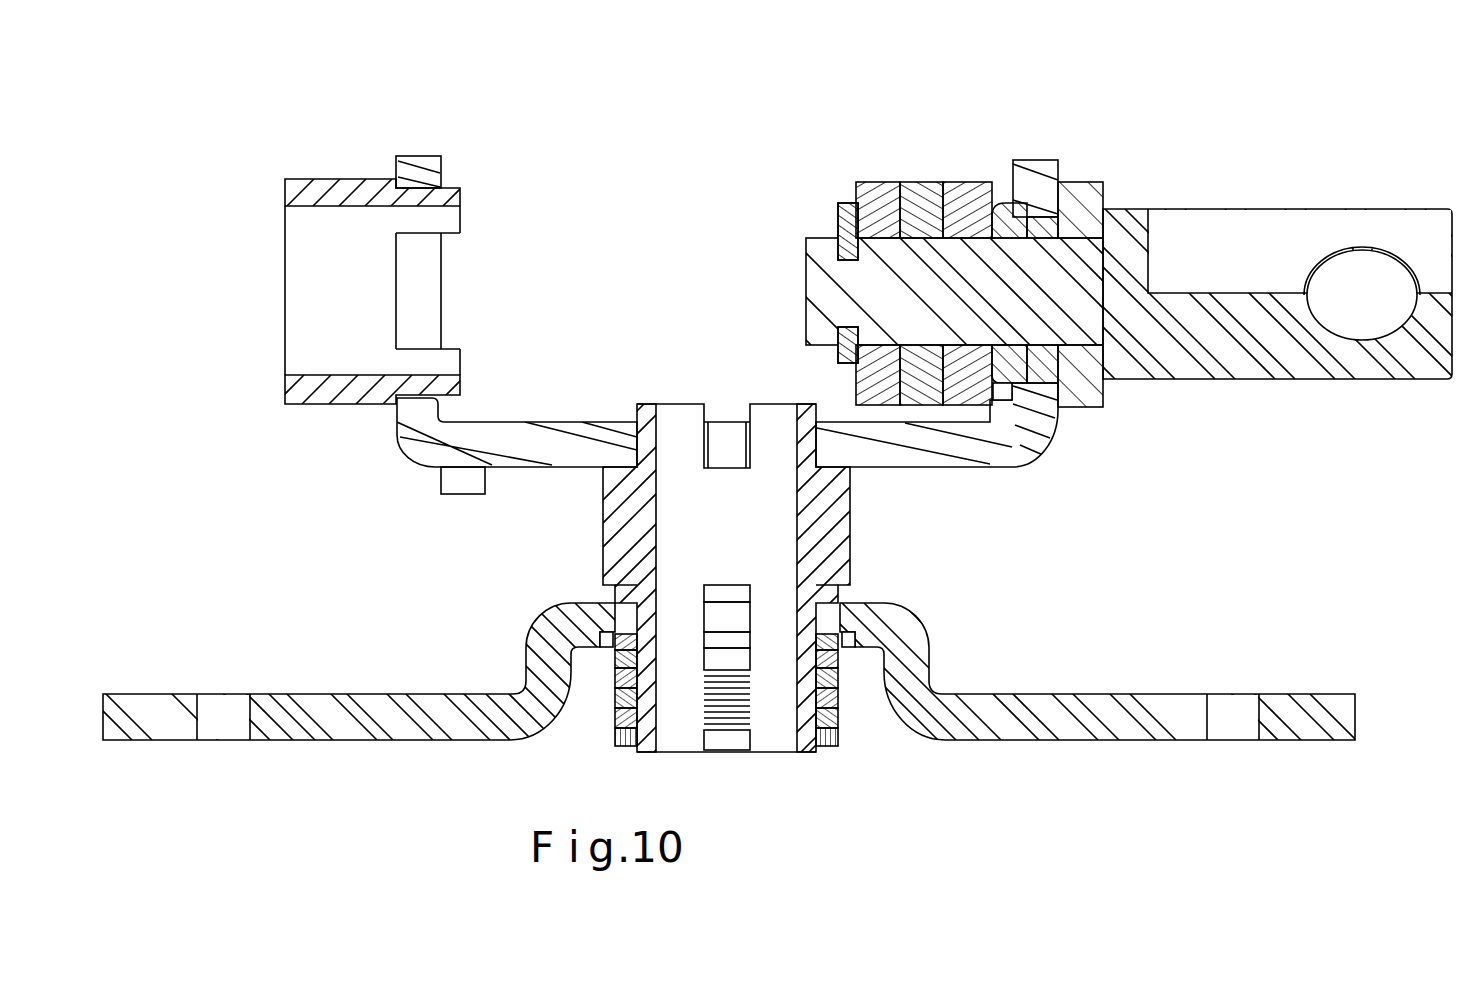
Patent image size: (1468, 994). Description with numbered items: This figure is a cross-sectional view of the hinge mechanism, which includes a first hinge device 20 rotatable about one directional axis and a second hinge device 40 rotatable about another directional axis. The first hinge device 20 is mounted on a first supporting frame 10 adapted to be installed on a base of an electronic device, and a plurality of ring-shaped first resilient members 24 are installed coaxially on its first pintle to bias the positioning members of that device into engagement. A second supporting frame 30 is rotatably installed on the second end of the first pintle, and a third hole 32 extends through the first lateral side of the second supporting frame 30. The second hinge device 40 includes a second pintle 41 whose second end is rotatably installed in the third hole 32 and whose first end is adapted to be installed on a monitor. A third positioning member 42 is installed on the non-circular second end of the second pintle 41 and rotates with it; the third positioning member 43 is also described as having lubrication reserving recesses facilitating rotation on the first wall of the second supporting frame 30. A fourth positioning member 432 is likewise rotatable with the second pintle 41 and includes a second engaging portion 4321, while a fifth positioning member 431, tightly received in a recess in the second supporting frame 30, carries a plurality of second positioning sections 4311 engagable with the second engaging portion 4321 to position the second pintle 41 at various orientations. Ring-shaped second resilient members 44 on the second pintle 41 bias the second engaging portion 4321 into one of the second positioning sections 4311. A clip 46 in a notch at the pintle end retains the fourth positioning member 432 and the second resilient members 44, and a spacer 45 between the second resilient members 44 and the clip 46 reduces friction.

The first supporting frame 10 is at (340, 741).
The first hinge device 20 is at (445, 558).
The first resilient members 24 is at (572, 757).
The second supporting frame 30 is at (530, 445).
The third hole 32 is at (1045, 200).
The second hinge device 40 is at (1086, 286).
The second pintle 41 is at (1185, 117).
The third positioning member 42 is at (1092, 190).
The third positioning member 43 is at (1006, 286).
The fifth positioning member 431 is at (1002, 200).
The fourth positioning member 432 is at (965, 182).
The second positioning sections 4311 is at (1008, 372).
The second engaging portion 4321 is at (992, 400).
The second resilient members 44 is at (906, 135).
The spacer 45 is at (872, 183).
The clip 46 is at (848, 205).